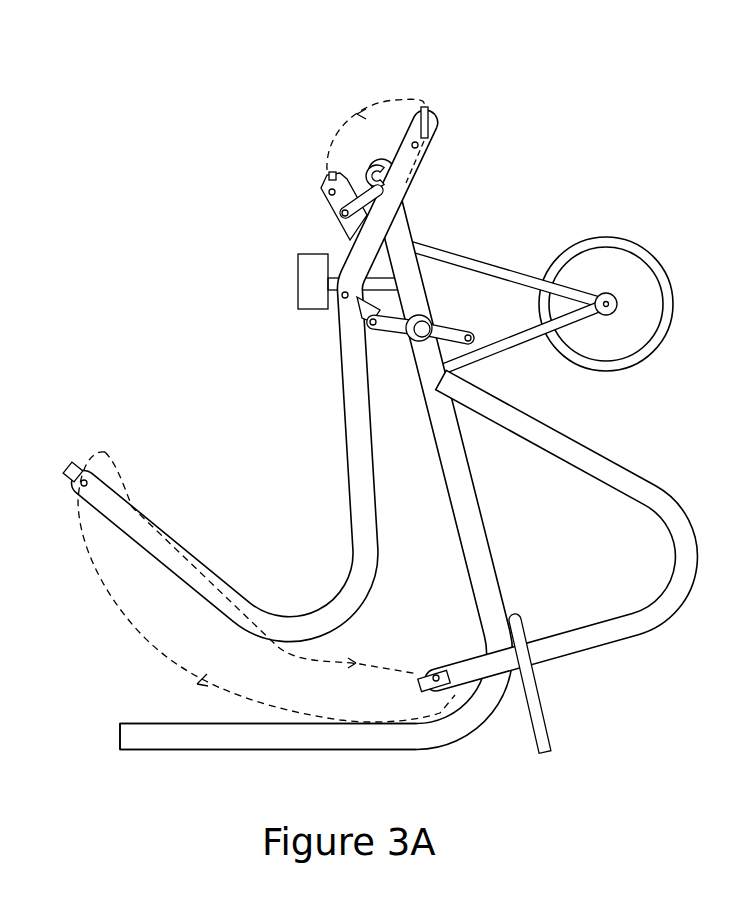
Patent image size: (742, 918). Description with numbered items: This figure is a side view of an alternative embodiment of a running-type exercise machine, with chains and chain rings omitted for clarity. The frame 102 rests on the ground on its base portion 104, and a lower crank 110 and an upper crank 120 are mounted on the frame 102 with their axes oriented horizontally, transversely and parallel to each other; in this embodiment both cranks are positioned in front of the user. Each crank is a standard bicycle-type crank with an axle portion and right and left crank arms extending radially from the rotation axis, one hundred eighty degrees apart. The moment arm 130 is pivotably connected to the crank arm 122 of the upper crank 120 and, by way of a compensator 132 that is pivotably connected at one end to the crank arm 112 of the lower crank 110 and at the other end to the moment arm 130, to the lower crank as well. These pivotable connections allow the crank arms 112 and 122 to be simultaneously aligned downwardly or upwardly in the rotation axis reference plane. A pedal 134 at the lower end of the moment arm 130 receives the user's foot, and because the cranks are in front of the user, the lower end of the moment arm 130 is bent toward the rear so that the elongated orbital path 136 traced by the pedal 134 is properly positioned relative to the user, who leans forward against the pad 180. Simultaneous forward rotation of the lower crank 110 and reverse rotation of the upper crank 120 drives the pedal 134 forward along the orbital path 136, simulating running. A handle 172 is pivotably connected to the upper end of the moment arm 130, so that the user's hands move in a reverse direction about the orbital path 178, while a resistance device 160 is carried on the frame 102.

The frame 102 is at (468, 510).
The base portion 104 is at (265, 735).
The lower crank 110 is at (428, 326).
The right crank arm of lower crank 112 is at (405, 318).
The upper crank 120 is at (381, 180).
The right crank arm of upper crank 122 is at (382, 163).
The moment arm 130 is at (360, 490).
The compensator 132 is at (362, 312).
The pedal 134 is at (430, 670).
The elongated orbital path 136 is at (147, 638).
The resistance device 160 is at (643, 252).
The handle 172 is at (426, 110).
The orbital path 178 is at (343, 133).
The pad 180 is at (306, 279).